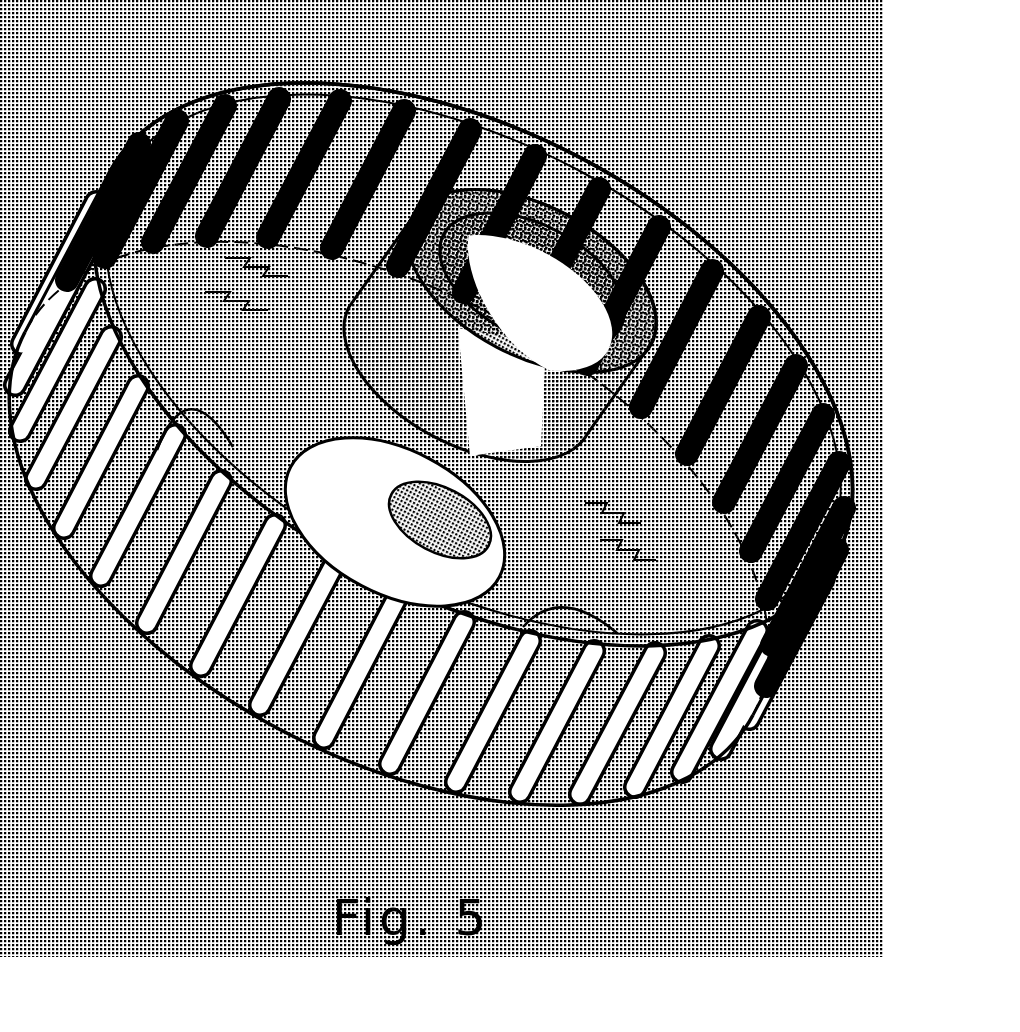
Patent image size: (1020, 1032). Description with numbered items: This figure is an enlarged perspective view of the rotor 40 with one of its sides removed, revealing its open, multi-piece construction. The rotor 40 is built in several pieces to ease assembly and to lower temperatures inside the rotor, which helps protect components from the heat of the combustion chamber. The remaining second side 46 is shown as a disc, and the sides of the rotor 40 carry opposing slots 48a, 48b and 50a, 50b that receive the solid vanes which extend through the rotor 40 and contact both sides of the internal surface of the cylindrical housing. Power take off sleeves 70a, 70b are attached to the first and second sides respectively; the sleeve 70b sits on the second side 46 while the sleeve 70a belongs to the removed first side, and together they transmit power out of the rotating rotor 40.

The rotor 40 is at (585, 142).
The second side 46 is at (312, 411).
The slot 48a is at (303, 86).
The slot 48b is at (556, 803).
The slot 50a is at (52, 512).
The slot 50b is at (808, 358).
The power take off sleeve 70a is at (462, 190).
The power take off sleeve 70b is at (760, 560).